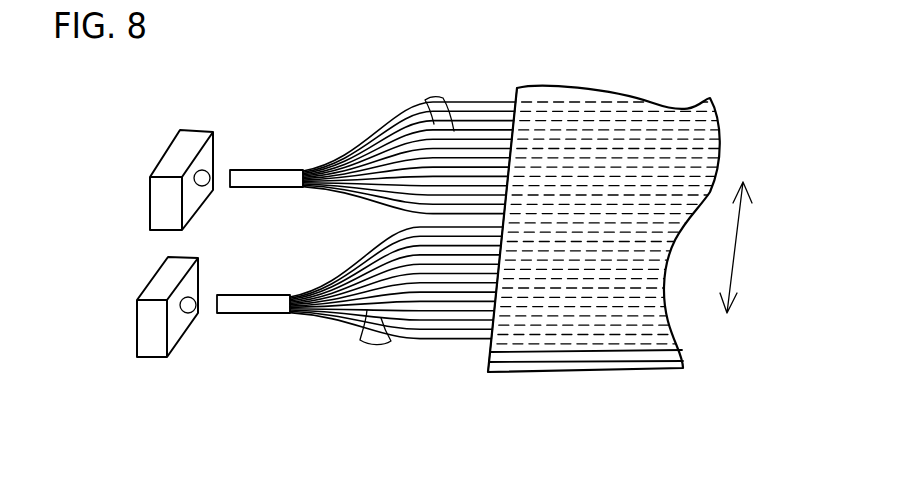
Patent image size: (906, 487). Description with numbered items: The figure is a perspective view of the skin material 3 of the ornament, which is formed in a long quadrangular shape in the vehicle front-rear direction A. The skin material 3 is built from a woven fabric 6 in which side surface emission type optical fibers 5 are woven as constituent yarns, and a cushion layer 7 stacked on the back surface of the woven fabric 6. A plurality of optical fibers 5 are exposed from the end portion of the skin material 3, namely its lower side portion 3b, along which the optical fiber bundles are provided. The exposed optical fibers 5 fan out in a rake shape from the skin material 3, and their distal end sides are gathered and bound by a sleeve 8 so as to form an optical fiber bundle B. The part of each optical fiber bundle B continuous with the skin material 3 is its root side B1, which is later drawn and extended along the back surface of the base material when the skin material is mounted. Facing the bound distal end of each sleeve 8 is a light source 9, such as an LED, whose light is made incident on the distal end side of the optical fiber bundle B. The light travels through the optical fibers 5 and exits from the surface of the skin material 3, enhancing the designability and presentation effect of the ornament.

The skin material 3 is at (610, 425).
The lower side portion 3b is at (486, 346).
The optical fiber 5 is at (427, 100).
The woven fabric 6 is at (595, 357).
The cushion layer 7 is at (552, 368).
The sleeve 8 is at (288, 170).
The light source 9 is at (207, 171).
The vehicle front-rear direction A is at (736, 248).
The optical fiber bundle B is at (365, 106).
The root side B1 is at (489, 82).